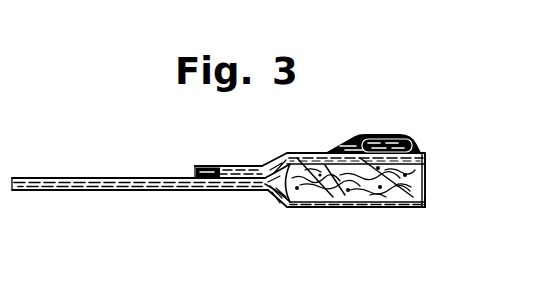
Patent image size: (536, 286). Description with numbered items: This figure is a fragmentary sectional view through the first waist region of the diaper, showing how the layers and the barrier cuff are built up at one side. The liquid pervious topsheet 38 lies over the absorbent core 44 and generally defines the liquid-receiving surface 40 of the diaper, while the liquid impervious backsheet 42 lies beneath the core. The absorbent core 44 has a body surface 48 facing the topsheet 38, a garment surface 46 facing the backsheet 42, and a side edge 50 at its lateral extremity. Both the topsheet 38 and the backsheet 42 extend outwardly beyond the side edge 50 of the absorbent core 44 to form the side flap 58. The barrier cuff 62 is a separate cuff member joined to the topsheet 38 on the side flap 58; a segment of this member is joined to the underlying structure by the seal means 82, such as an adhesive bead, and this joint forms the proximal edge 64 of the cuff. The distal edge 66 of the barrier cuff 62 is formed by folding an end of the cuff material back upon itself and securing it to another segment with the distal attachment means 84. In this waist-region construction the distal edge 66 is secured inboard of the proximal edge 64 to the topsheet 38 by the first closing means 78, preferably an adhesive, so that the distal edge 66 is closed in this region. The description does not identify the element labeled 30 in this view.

The surgical instrument 30 is at (12, 181).
The topsheet 38 is at (59, 178).
The side flap 58 is at (100, 191).
The seal means 82 is at (192, 176).
The proximal edge 64 is at (194, 170).
The barrier cuff 62 is at (303, 153).
The side edge 50 is at (268, 194).
The liquid-receiving surface 40 is at (428, 157).
The body surface 48 is at (425, 157).
The distal edge 66 is at (423, 157).
The absorbent core 44 is at (416, 180).
The backsheet 42 is at (372, 208).
The garment surface 46 is at (413, 209).
The first closing means 78 is at (344, 150).
The distal attachment means 84 is at (368, 150).